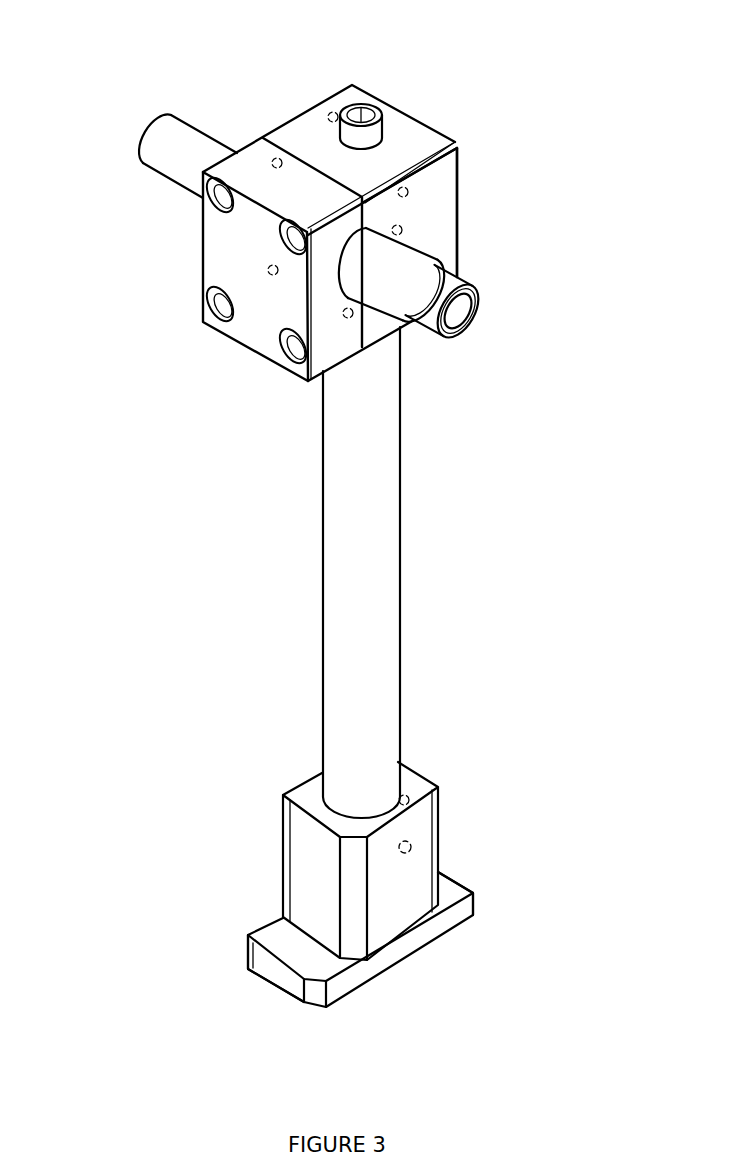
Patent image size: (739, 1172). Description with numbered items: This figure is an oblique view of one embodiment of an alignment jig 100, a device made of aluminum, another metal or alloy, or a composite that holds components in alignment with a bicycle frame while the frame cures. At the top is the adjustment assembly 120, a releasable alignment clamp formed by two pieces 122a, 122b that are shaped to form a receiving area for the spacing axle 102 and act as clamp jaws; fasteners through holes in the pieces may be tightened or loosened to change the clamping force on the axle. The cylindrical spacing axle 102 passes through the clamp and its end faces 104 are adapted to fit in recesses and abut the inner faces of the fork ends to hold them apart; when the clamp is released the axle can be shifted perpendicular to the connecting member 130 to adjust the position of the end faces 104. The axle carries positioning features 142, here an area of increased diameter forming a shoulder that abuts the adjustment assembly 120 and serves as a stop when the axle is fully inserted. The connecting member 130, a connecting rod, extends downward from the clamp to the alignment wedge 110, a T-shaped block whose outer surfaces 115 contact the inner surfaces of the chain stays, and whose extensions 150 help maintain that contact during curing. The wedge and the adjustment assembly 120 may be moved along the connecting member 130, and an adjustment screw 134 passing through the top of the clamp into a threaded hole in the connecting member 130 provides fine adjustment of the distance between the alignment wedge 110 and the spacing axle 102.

The alignment jig 100 is at (238, 605).
The spacing axle 102 is at (183, 137).
The end faces 104 is at (473, 290).
The alignment wedge 110 is at (305, 868).
The outer surfaces 115 is at (410, 905).
The adjustment assembly 120 is at (242, 108).
The piece 122a is at (205, 242).
The piece 122b is at (447, 140).
The connecting member 130 is at (345, 503).
The adjustment screw 134 is at (340, 138).
The positioning features 142 is at (417, 247).
The extensions 150 is at (463, 878).